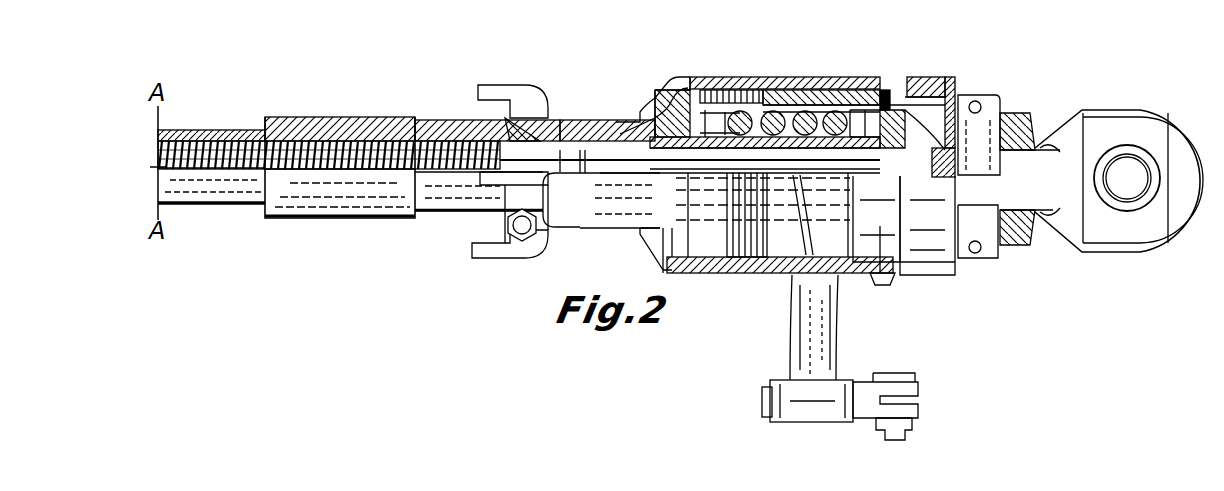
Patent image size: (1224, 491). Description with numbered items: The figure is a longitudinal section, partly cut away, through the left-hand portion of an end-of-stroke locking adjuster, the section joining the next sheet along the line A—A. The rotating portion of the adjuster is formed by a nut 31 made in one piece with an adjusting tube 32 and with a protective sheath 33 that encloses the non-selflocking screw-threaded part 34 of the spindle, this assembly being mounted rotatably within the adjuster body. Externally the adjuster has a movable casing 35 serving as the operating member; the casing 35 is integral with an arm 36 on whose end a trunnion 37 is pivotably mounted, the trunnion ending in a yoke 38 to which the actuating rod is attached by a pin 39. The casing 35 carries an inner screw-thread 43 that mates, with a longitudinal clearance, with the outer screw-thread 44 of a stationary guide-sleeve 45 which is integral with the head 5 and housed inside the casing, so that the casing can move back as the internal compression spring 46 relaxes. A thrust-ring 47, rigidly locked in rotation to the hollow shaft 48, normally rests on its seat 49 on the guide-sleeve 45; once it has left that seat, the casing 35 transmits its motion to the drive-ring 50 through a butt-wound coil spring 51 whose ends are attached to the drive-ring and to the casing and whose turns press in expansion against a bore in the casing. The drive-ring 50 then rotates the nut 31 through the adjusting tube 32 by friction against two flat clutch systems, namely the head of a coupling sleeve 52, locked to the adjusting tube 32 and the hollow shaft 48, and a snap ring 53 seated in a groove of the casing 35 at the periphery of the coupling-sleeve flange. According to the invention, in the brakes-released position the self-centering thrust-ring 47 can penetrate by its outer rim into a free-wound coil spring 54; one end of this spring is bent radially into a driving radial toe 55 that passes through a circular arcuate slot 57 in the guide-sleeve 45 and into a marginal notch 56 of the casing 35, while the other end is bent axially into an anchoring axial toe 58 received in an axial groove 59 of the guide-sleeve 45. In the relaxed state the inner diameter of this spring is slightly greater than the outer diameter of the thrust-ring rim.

The head 5 is at (945, 81).
The nut 31 is at (334, 131).
The adjusting tube 32 is at (443, 133).
The protective sheath 33 is at (192, 133).
The screw-threaded part 34 is at (242, 140).
The movable casing 35 is at (768, 86).
The arm 36 is at (830, 344).
The trunnion 37 is at (770, 404).
The yoke 38 is at (918, 388).
The pin 39 is at (920, 407).
The inner screw-thread 43 is at (816, 92).
The outer screw-thread 44 is at (804, 210).
The guide-sleeve 45 is at (876, 272).
The compression spring 46 is at (742, 135).
The thrust-ring 47 is at (870, 165).
The hollow shaft 48 is at (804, 135).
The seat 49 is at (848, 135).
The drive-ring 50 is at (661, 101).
The butt-wound coil spring 51 is at (737, 90).
The coupling sleeve 52 is at (605, 128).
The snap ring 53 is at (656, 261).
The coil spring 54 is at (928, 165).
The driving radial toe 55 is at (902, 103).
The marginal notch 56 is at (886, 102).
The circular arcuate slot 57 is at (882, 92).
The anchoring axial toe 58 is at (1008, 124).
The axial groove 59 is at (982, 96).